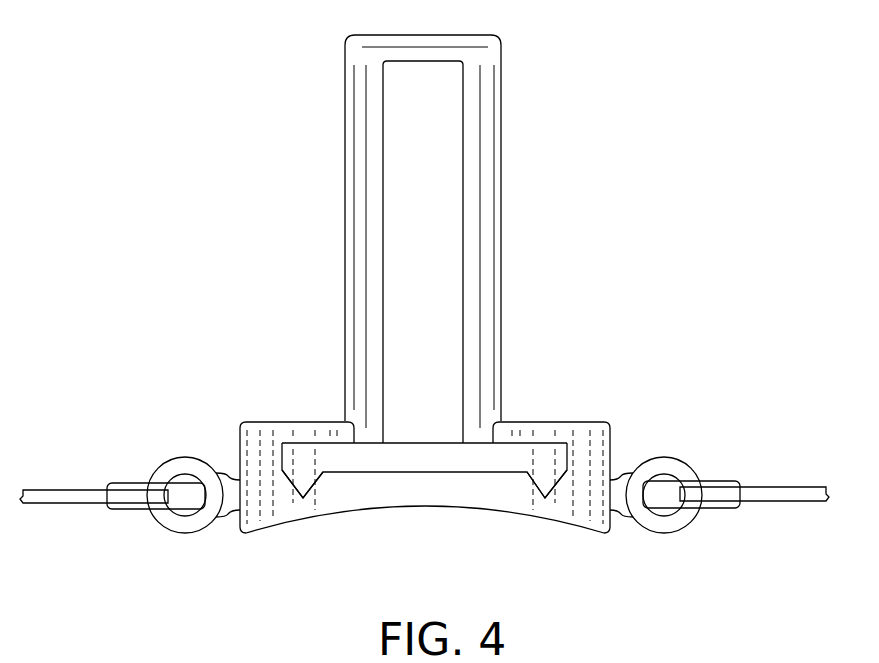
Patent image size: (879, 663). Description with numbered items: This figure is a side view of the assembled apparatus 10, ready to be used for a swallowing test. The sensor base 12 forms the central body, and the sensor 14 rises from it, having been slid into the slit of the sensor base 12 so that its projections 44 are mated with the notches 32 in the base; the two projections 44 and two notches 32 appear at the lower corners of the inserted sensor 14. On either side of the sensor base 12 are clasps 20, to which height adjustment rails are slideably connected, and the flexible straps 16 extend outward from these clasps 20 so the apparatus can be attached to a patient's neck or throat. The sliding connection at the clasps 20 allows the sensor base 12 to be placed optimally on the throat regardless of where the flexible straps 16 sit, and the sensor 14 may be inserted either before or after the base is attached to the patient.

The apparatus 10 is at (668, 130).
The sensor base 12 is at (278, 421).
The sensor 14 is at (502, 219).
The flexible straps 16 is at (62, 490).
The clasps 20 is at (185, 535).
The notches 32 is at (318, 491).
The projections 44 is at (302, 478).